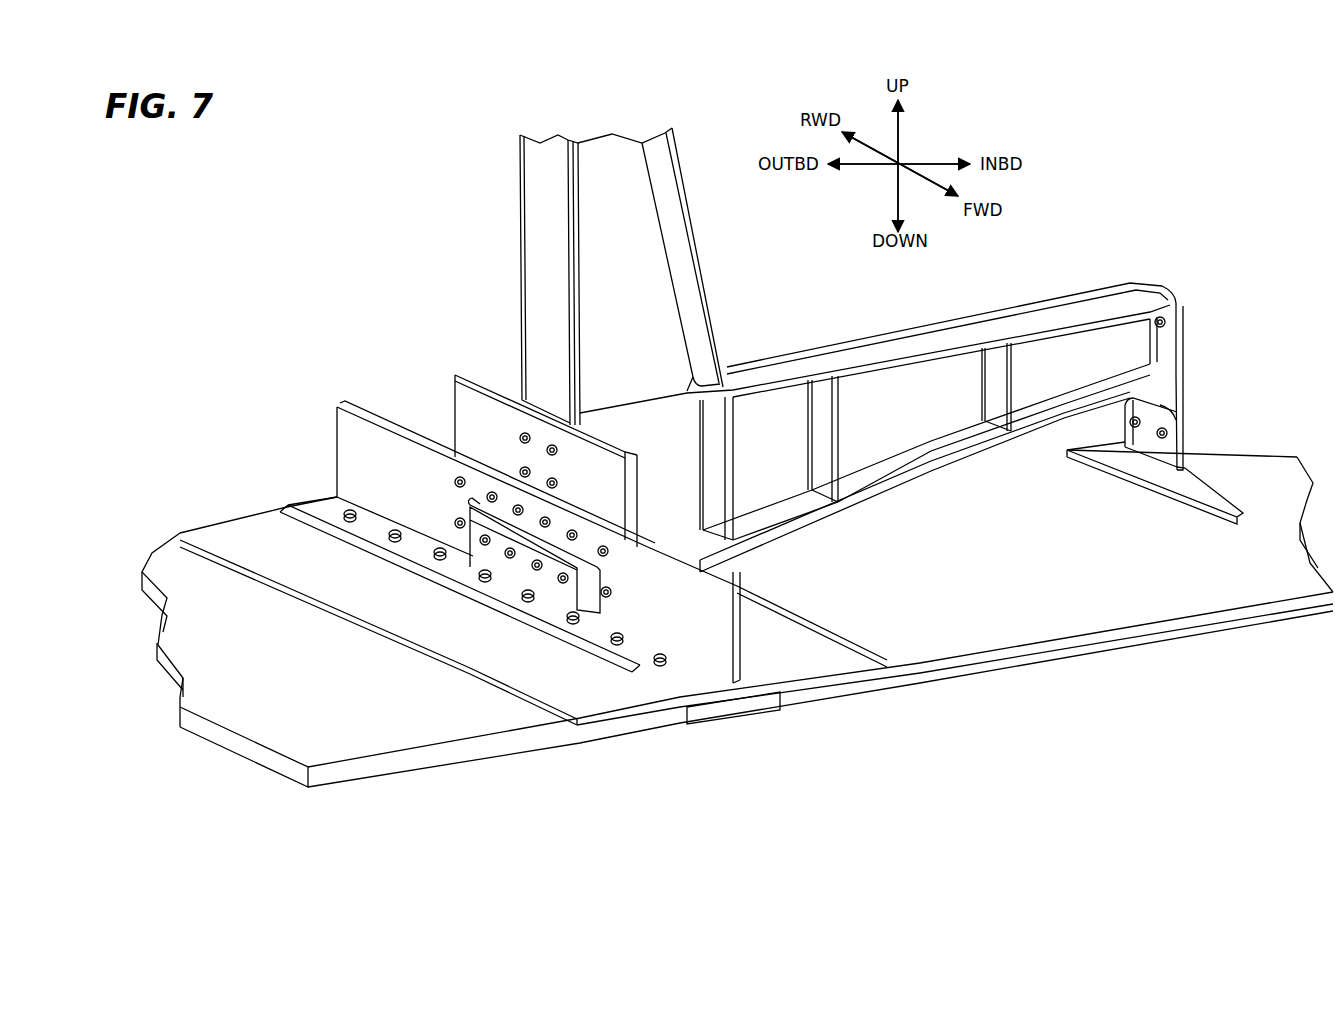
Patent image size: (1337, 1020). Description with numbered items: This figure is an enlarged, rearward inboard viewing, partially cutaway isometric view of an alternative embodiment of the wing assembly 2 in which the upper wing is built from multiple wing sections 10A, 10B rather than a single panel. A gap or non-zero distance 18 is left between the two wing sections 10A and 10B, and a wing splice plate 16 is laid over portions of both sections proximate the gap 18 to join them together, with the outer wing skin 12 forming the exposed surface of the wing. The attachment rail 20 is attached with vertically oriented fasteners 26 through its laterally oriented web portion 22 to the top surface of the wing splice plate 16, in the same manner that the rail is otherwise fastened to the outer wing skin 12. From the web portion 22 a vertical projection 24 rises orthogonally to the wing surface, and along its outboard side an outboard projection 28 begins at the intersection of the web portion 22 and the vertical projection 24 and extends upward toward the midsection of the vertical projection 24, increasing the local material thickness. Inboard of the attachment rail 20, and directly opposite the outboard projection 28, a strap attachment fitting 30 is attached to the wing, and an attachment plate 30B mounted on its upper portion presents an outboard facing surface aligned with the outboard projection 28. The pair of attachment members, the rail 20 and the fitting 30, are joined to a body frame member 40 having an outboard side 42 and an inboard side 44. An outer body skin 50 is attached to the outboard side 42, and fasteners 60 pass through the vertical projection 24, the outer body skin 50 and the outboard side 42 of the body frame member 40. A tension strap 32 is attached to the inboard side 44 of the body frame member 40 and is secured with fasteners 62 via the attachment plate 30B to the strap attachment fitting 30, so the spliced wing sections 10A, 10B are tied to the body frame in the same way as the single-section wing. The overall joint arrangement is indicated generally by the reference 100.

The wing assembly 2 is at (188, 778).
The fitting assembly 100 is at (286, 188).
The wing section 10A is at (432, 733).
The wing section 10B is at (1062, 625).
The outer wing skin 12 is at (195, 600).
The wing splice plate 16 is at (867, 660).
The gap or non-zero distance 18 is at (783, 716).
The attachment rail 20 is at (349, 458).
The web portion 22 is at (313, 512).
The vertical projection 24 is at (362, 415).
The vertically oriented fasteners 26 is at (660, 665).
The outboard projection 28 is at (508, 530).
The strap attachment fitting 30 is at (1205, 492).
The attachment plate 30B is at (1155, 423).
The tension strap 32 is at (1153, 400).
The body frame member 40 is at (824, 373).
The outboard side 42 is at (530, 312).
The inboard side 44 is at (1118, 310).
The outer body skin 50 is at (495, 410).
The fasteners 60 is at (603, 552).
The fasteners 62 is at (1160, 435).